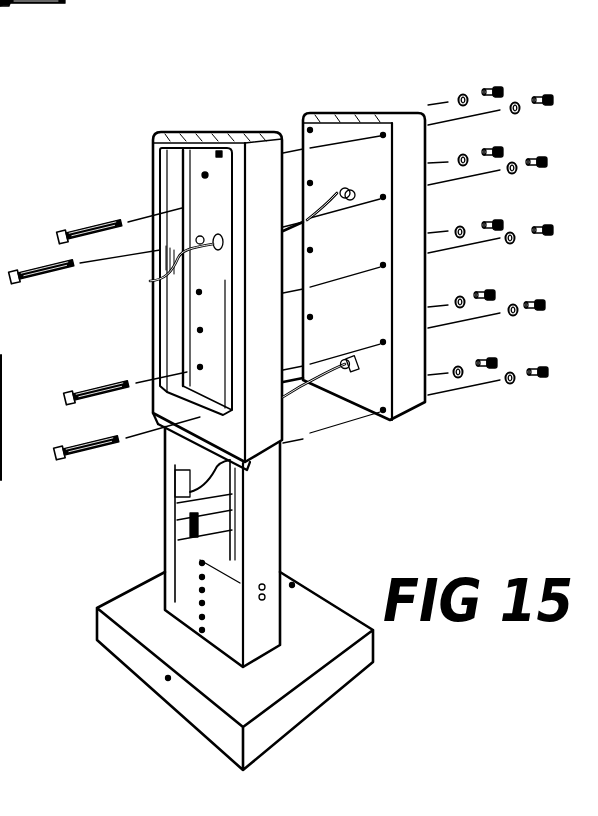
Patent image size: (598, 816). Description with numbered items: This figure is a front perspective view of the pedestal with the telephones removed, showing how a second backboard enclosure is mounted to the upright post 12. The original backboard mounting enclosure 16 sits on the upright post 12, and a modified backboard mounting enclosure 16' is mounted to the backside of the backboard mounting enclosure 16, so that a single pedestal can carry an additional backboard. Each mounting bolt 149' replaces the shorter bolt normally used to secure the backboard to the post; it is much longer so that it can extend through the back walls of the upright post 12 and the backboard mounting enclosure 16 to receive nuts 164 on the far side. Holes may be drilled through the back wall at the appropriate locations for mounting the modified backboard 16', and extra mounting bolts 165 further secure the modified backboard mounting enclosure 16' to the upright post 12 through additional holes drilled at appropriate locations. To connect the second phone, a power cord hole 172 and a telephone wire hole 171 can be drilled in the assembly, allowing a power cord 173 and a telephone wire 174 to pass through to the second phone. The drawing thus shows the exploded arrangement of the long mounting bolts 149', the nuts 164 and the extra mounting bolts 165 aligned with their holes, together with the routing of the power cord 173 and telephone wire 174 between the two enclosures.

The upright post 12 is at (272, 525).
The backboard mounting enclosure 16 is at (197, 301).
The modified backboard mounting enclosure 16' is at (378, 282).
The mounting bolt 149' is at (100, 230).
The nuts 164 is at (538, 160).
The extra mounting bolts 165 is at (543, 96).
The telephone wire hole 171 is at (355, 196).
The power cord hole 172 is at (352, 372).
The power cord 173 is at (343, 359).
The telephone wire 174 is at (312, 224).